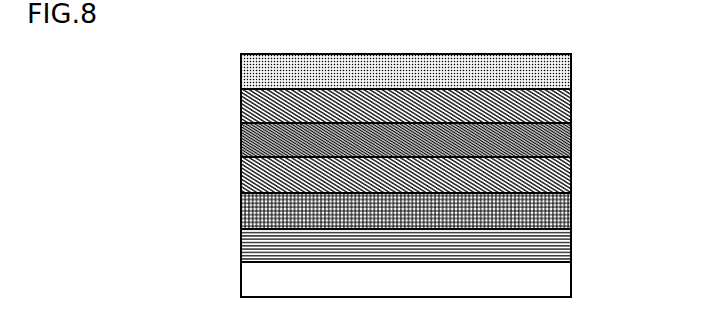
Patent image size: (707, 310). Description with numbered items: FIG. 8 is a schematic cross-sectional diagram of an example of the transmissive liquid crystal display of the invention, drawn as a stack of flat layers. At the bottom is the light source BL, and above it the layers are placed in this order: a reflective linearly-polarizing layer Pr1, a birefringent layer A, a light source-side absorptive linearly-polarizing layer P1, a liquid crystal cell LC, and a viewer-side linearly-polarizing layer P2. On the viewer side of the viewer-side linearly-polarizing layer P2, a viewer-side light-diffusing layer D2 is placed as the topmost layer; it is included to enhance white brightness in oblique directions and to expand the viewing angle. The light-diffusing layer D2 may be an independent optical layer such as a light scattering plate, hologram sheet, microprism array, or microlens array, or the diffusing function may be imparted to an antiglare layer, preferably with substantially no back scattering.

The viewer-side light-diffusing layer D2 is at (557, 71).
The viewer-side linearly-polarizing layer P2 is at (547, 108).
The liquid crystal cell LC is at (551, 139).
The light source-side absorptive linearly-polarizing layer P1 is at (552, 178).
The birefringent layer A is at (557, 211).
The reflective linearly-polarizing layer Pr1 is at (572, 247).
The light source BL is at (554, 283).